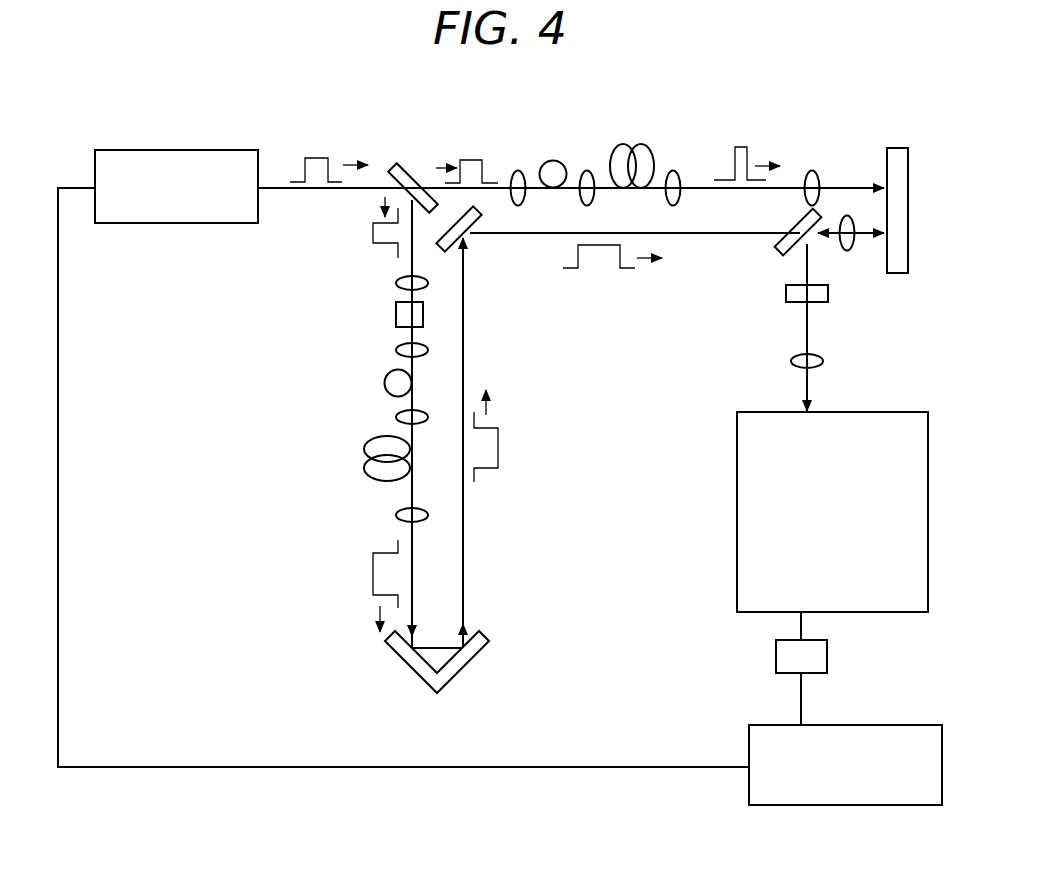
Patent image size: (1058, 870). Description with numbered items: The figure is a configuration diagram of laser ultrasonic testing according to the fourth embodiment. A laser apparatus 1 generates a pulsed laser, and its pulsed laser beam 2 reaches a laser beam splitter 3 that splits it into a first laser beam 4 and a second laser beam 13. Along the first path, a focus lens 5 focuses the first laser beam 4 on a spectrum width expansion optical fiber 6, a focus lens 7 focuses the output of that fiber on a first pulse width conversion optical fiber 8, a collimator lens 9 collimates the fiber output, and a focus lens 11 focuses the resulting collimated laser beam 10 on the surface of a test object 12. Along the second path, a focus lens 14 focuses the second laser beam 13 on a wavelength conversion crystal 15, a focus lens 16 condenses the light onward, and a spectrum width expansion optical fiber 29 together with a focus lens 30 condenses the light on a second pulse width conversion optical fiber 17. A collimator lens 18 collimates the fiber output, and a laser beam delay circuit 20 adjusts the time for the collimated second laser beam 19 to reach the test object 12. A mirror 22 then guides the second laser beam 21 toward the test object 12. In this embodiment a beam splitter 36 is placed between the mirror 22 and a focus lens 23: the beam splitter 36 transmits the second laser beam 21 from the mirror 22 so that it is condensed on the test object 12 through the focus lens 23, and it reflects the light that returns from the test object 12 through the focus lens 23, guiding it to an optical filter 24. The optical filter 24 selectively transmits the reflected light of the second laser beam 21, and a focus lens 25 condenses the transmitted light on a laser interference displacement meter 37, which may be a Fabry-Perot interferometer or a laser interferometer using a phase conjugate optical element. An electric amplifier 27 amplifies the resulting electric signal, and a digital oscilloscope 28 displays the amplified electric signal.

The laser apparatus 1 is at (180, 150).
The pulsed laser beam 2 is at (310, 165).
The laser beam splitter 3 is at (420, 180).
The first laser beam 4 is at (466, 164).
The focus lens 5 is at (521, 172).
The spectrum width expansion optical fiber 6 is at (558, 161).
The focus lens 7 is at (591, 171).
The first pulse width conversion optical fiber 8 is at (636, 144).
The collimator lens 9 is at (677, 172).
The collimated laser beam 10 is at (752, 148).
The focus lens 11 is at (818, 180).
The test object 12 is at (897, 148).
The second laser beam 13 is at (372, 235).
The focus lens 14 is at (398, 282).
The wavelength conversion crystal 15 is at (396, 312).
The focus lens 16 is at (398, 350).
The second pulse width conversion optical fiber 17 is at (366, 456).
The collimator lens 18 is at (398, 515).
The collimated second laser beam 19 is at (373, 574).
The laser beam delay circuit 20 is at (452, 664).
The second laser beam 21 is at (600, 262).
The mirror 22 is at (468, 240).
The focus lens 23 is at (848, 251).
The optical filter 24 is at (818, 293).
The focus lens 25 is at (797, 358).
The electric amplifier 27 is at (828, 661).
The digital oscilloscope 28 is at (828, 725).
The spectrum width expansion optical fiber 29 is at (385, 382).
The focus lens 30 is at (398, 417).
The beam splitter 36 is at (790, 229).
The laser interference displacement meter 37 is at (842, 412).